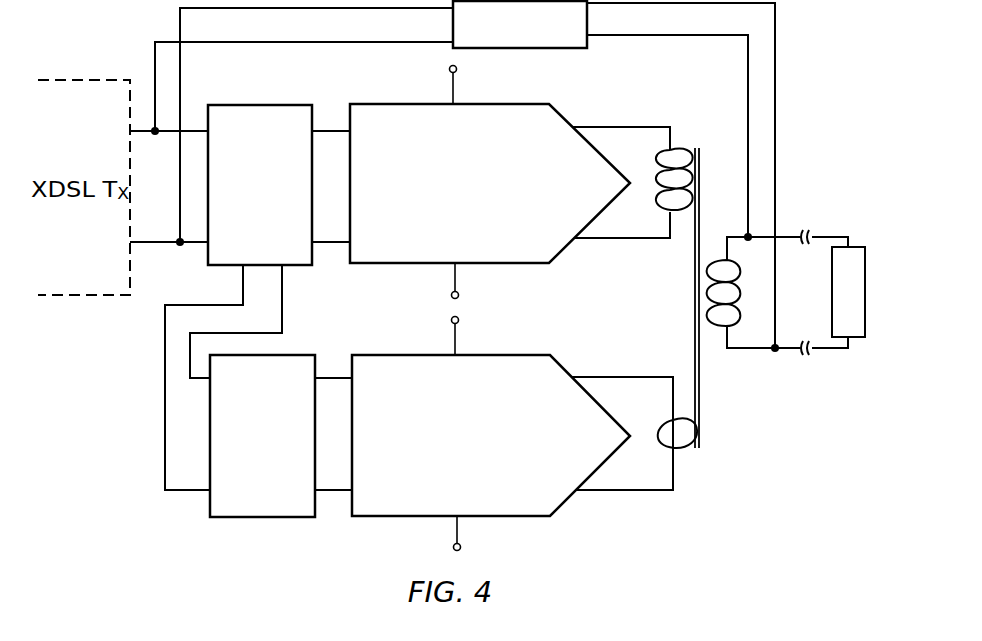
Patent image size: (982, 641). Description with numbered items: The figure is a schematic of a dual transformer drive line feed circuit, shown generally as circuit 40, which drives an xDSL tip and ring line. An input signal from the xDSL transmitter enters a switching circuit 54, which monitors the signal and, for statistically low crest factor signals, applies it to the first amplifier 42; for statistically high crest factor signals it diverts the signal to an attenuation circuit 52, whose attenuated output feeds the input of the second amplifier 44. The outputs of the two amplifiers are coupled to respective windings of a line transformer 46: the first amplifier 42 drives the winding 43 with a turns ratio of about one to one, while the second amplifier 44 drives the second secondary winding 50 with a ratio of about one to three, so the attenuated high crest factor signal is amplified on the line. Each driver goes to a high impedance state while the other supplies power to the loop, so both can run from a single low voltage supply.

The dual transformer driver circuit 40 is at (621, 100).
The first amplifier 42 is at (475, 104).
The first primary winding 43 is at (671, 207).
The second amplifier 44 is at (477, 355).
The line transformer 46 is at (702, 165).
The second secondary winding 50 is at (672, 451).
The attenuation circuit 52 is at (292, 355).
The switching circuit 54 is at (261, 104).